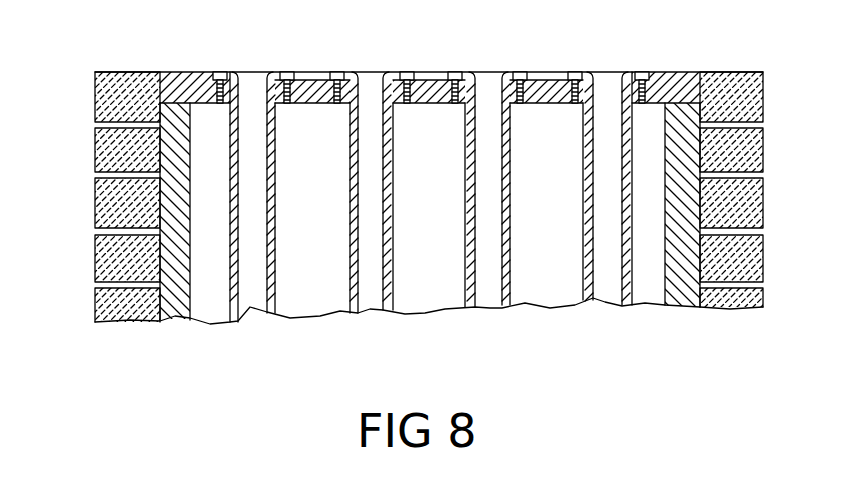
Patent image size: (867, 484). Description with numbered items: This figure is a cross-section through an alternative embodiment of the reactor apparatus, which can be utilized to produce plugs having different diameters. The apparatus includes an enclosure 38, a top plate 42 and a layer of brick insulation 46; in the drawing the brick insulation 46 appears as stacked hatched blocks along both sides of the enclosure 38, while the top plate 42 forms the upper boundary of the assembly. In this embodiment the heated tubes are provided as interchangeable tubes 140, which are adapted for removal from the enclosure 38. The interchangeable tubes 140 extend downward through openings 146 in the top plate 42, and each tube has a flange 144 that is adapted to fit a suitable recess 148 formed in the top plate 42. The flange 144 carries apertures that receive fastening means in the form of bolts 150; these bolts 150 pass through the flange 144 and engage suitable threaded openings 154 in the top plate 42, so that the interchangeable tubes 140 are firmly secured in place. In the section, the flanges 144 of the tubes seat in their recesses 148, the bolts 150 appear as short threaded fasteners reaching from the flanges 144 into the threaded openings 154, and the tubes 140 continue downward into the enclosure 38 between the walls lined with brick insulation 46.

The enclosure 38 is at (160, 268).
The top plate 42 is at (315, 73).
The layer of brick insulation 46 is at (95, 200).
The interchangeable tubes 140 is at (277, 173).
The flange 144 is at (233, 73).
The openings 146 is at (397, 104).
The recess 148 is at (208, 77).
The bolts 150 is at (405, 73).
The threaded openings 154 is at (462, 104).